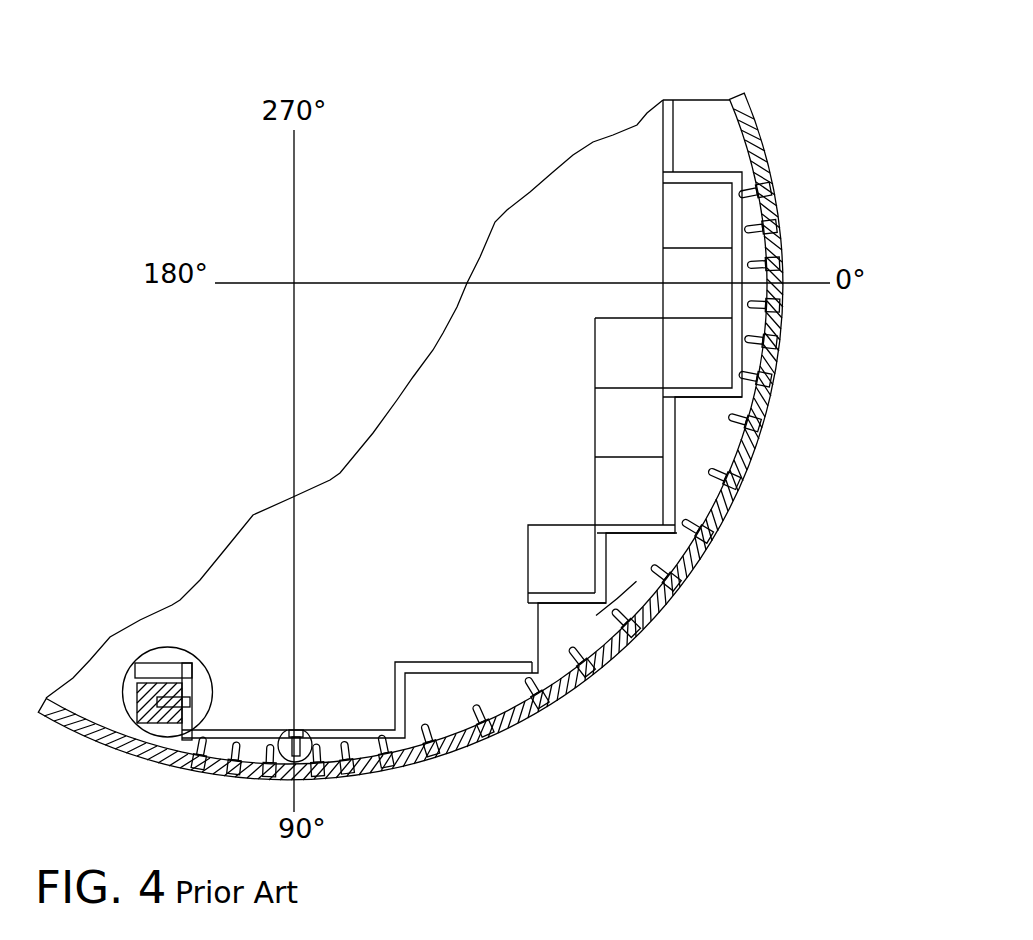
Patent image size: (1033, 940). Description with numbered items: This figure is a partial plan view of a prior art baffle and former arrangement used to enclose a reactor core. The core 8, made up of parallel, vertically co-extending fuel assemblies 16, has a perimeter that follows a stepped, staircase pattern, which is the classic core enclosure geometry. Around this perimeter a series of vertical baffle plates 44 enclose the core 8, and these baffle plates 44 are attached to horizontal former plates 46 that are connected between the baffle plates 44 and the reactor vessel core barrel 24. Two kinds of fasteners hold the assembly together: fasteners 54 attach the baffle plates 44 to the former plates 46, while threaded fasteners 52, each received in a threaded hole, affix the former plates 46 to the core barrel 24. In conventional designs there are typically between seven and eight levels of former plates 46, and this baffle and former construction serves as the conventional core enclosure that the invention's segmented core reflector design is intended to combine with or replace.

The core 8 is at (414, 497).
The fuel assemblies 16 is at (663, 225).
The core barrel 24 is at (767, 162).
The baffle plates 44 is at (467, 661).
The former plates 46 is at (633, 580).
The fastener 52 is at (780, 353).
The fastener 54 is at (196, 693).